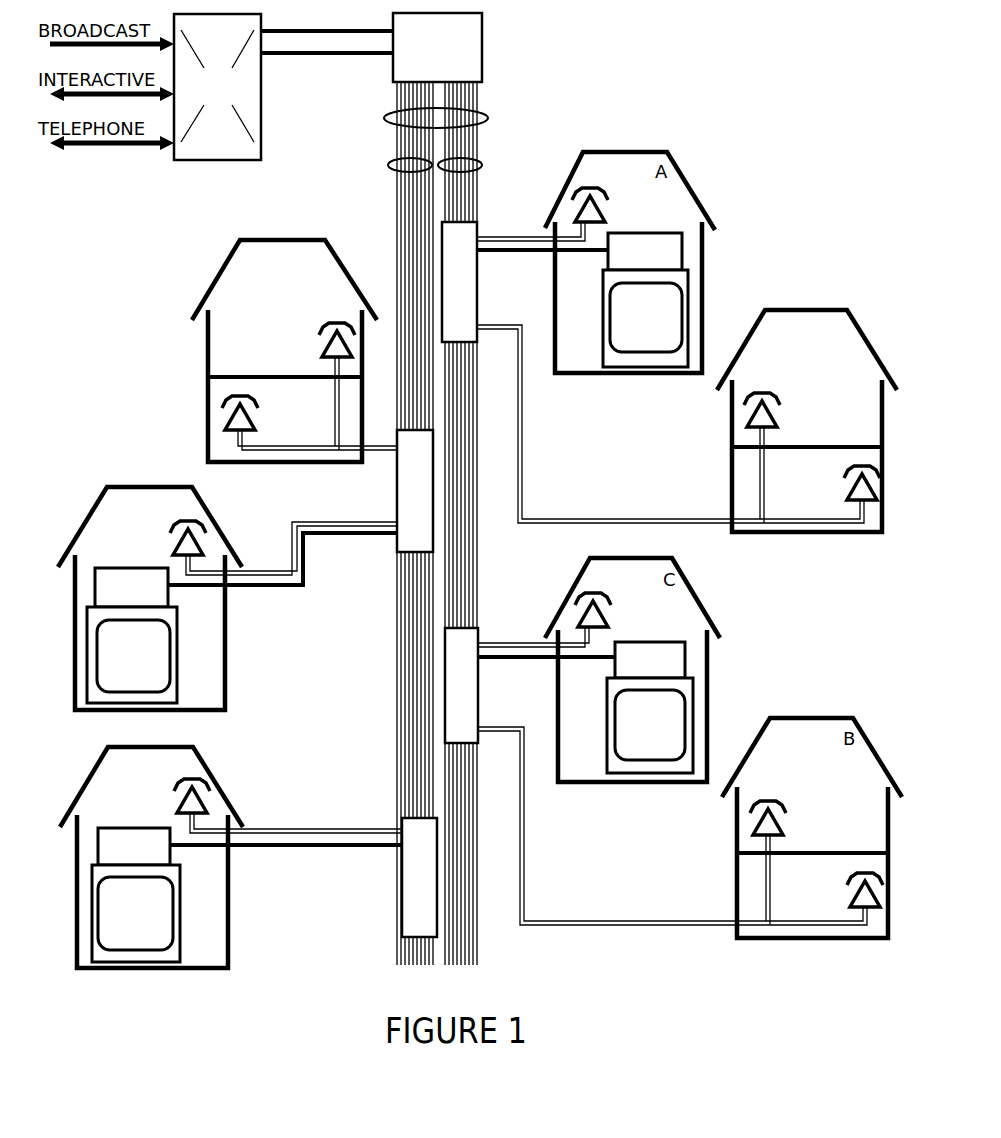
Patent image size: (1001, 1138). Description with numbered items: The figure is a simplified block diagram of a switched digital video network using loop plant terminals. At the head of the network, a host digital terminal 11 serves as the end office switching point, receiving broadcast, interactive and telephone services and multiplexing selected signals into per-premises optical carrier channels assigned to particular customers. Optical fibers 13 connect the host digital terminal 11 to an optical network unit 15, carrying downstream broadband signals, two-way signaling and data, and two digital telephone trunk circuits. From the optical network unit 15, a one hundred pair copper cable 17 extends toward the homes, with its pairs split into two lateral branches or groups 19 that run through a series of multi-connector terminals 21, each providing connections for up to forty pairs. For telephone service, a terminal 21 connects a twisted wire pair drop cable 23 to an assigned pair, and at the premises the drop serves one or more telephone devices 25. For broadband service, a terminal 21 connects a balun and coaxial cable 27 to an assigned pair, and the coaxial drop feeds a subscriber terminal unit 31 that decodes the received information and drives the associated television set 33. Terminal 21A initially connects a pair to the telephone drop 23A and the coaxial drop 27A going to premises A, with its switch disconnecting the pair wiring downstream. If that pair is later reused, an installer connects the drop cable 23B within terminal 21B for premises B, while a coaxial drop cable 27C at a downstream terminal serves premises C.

The host digital terminal 11 is at (234, 103).
The optical fibers 13 is at (327, 64).
The optical network unit 15 is at (484, 57).
The copper cable 17 is at (490, 118).
The groups of pairs 19 is at (503, 165).
The terminal 21 is at (396, 508).
The terminal 21A is at (476, 282).
The terminal 21B is at (478, 685).
The twisted wire pair drop cable 23 is at (378, 441).
The drop 23A is at (531, 217).
The drop cable 23B is at (672, 826).
The telephone device 25 is at (607, 200).
The coaxial cable 27 is at (285, 712).
The coaxial drop 27A is at (540, 257).
The coaxial drop cable 27C is at (540, 668).
The subscriber terminal unit 31 is at (392, 536).
The television set 33 is at (602, 337).